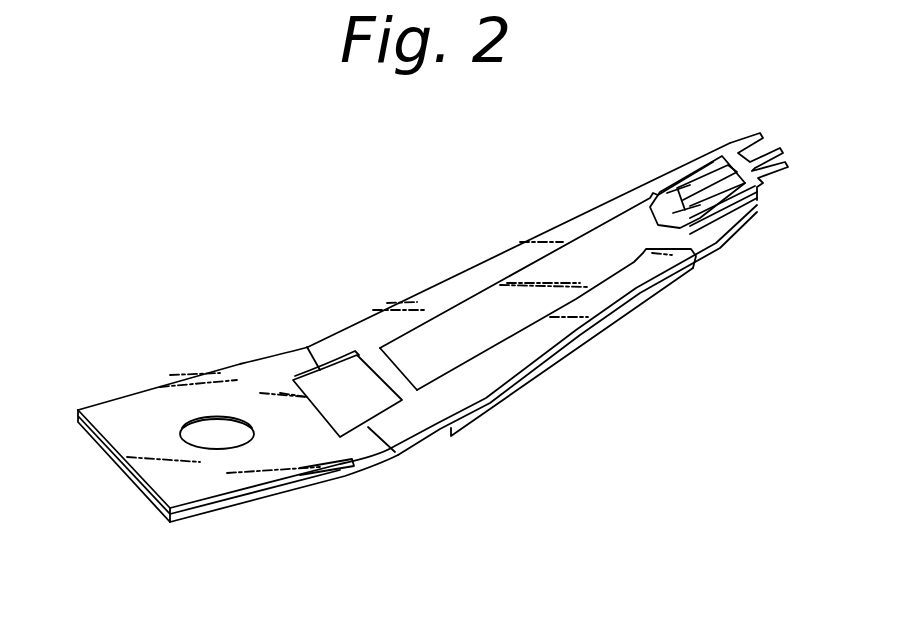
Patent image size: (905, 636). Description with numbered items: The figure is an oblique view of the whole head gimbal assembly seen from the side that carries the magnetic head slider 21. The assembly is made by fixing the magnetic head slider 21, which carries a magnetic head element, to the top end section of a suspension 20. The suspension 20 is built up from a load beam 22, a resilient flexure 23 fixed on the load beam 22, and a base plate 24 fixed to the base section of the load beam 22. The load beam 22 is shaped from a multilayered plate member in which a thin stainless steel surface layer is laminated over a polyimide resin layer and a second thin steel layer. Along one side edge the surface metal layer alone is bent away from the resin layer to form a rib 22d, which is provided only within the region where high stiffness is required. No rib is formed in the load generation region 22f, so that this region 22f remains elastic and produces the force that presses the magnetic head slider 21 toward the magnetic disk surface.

The suspension 20 is at (347, 293).
The magnetic head slider 21 is at (698, 188).
The load beam 22 is at (437, 300).
The rib 22d is at (513, 378).
The load generation region 22f is at (400, 428).
The resilient flexure 23 is at (550, 278).
The base plate 24 is at (240, 505).